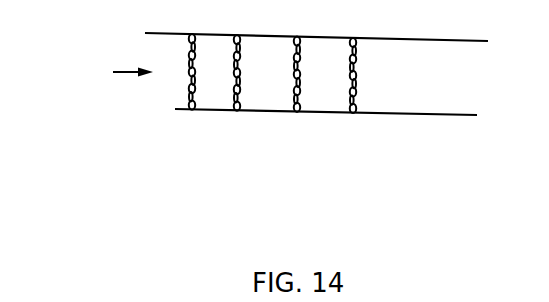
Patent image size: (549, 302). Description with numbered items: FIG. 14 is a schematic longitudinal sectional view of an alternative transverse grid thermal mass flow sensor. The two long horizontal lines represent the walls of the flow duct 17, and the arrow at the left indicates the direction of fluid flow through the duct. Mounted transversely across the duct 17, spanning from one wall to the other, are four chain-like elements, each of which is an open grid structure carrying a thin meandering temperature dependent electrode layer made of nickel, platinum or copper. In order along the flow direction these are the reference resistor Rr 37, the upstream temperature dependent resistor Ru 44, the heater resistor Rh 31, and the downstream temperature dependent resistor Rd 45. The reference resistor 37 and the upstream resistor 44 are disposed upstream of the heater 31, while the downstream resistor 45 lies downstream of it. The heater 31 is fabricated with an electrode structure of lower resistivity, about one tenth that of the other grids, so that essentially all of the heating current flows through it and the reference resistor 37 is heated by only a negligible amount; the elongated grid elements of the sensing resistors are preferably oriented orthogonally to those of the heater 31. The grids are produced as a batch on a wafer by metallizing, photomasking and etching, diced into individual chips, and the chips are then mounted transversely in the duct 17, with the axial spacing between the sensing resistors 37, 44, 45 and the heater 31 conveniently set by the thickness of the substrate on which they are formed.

The flow duct 17 is at (412, 39).
The reference resistor 37 is at (195, 98).
The upstream temperature dependent resistor 44 is at (240, 99).
The heater resistor 31 is at (301, 100).
The downstream temperature dependent resistor 45 is at (357, 100).
The reference resistor Rr is at (201, 79).
The upstream resistor Ru is at (241, 52).
The heater resistor Rh is at (299, 62).
The downstream resistor Rd is at (355, 57).